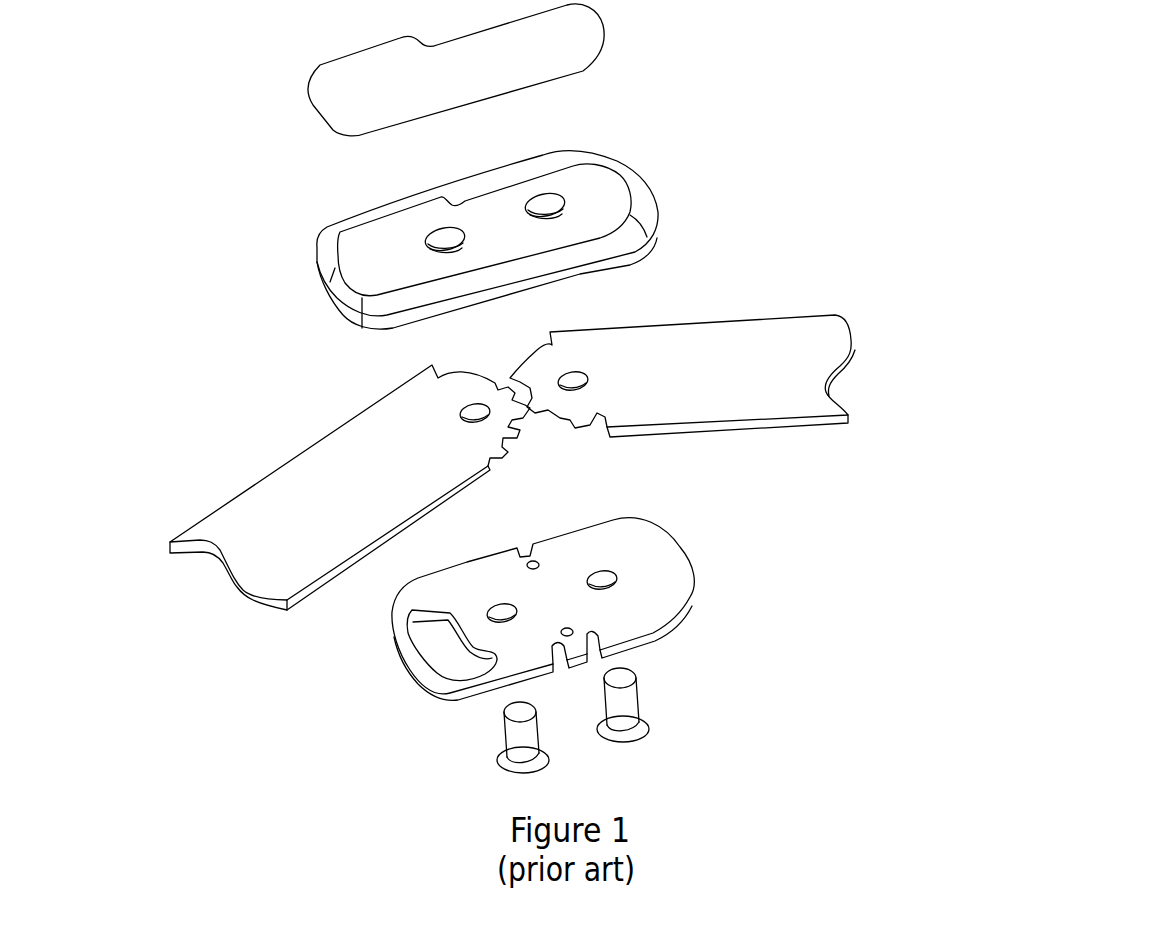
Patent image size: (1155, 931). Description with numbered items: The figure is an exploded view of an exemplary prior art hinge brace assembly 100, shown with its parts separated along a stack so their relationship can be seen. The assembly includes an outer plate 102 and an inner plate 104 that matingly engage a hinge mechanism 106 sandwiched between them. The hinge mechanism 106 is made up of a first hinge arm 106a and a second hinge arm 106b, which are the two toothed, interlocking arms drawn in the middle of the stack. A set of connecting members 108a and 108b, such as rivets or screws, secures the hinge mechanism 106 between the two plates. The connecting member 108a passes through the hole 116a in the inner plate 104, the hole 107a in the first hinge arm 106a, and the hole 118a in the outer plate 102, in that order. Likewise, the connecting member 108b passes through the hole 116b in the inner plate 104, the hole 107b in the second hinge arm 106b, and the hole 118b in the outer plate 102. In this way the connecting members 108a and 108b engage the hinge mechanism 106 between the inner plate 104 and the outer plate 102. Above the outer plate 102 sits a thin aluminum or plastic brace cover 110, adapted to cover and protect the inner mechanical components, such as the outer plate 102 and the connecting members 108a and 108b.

The hinge brace assembly 100 is at (1046, 100).
The outer plate 102 is at (704, 150).
The inner plate 104 is at (734, 526).
The hinge mechanism 106 is at (907, 341).
The first hinge arm 106a is at (316, 450).
The second hinge arm 106b is at (682, 325).
The hole 107a is at (478, 422).
The hole 107b is at (577, 390).
The connecting member 108a is at (486, 780).
The connecting member 108b is at (668, 748).
The brace cover 110 is at (318, 72).
The hole 116a is at (500, 620).
The hole 116b is at (608, 584).
The hole 118a is at (437, 228).
The hole 118b is at (548, 198).